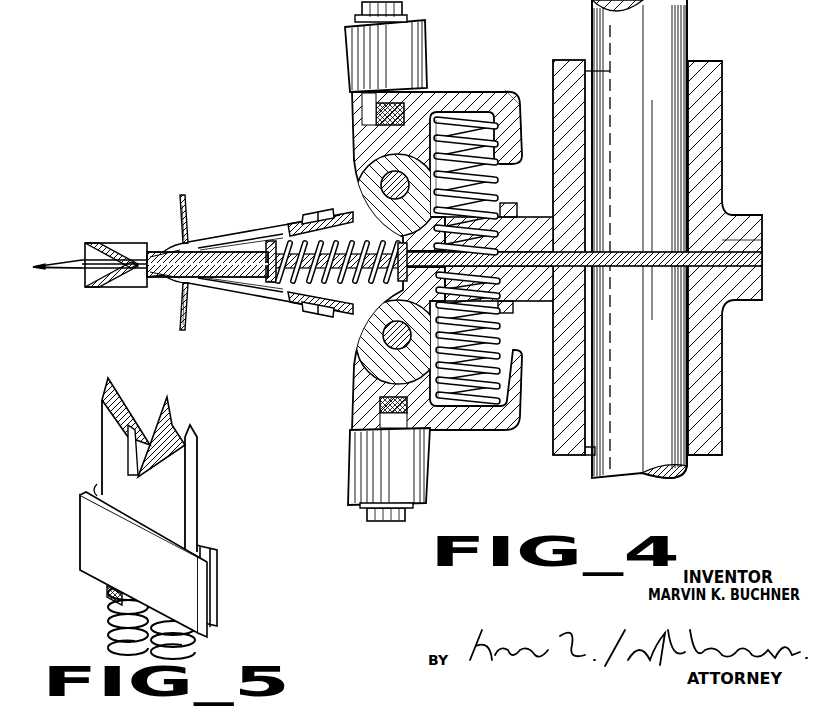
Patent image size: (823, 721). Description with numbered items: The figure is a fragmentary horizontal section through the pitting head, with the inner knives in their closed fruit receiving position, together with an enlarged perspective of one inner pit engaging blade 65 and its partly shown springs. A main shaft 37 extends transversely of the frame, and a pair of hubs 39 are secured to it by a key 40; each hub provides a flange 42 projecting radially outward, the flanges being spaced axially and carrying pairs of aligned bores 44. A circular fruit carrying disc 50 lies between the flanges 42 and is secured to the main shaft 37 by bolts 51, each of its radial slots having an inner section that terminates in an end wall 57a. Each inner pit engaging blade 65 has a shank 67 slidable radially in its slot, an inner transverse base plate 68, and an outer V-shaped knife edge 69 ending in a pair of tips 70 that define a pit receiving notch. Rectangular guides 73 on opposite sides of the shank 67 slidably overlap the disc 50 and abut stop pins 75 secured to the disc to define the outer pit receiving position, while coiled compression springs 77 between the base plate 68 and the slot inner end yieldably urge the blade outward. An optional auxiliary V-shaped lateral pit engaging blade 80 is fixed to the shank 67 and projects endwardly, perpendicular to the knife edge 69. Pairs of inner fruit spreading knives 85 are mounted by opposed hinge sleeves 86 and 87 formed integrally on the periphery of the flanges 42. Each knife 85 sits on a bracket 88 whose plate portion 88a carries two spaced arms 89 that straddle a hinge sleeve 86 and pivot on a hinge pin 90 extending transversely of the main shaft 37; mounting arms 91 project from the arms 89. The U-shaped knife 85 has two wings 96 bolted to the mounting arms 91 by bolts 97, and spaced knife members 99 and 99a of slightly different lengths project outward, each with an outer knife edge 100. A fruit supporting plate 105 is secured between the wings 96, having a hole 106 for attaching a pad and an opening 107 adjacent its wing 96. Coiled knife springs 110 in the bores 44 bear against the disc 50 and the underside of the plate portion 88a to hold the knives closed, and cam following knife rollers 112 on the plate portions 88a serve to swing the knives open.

In FIG. 4, the main shaft 37 is at (660, 32).
In FIG. 4, the hub 39 is at (708, 103).
In FIG. 4, the key 40 is at (585, 178).
In FIG. 4, the flange 42 is at (560, 247).
In FIG. 4, the bore 44 is at (515, 215).
In FIG. 4, the fruit carrying disc 50 is at (721, 250).
In FIG. 4, the bolt 51 is at (500, 205).
In FIG. 4, the end wall 57a is at (400, 237).
In FIG. 4, the inner pit engaging blade 65 is at (154, 247).
In FIG. 5, the inner pit engaging blade 65 is at (197, 487).
In FIG. 4, the shank 67 is at (205, 260).
In FIG. 5, the shank 67 is at (125, 506).
In FIG. 4, the base plate 68 is at (274, 285).
In FIG. 5, the base plate 68 is at (118, 610).
In FIG. 4, the V-shaped knife edge 69 is at (92, 257).
In FIG. 5, the V-shaped knife edge 69 is at (125, 415).
In FIG. 5, the tip 70 is at (108, 380).
In FIG. 4, the rectangular guide 73 is at (237, 252).
In FIG. 5, the rectangular guide 73 is at (147, 545).
In FIG. 4, the stop pin 75 is at (192, 250).
In FIG. 4, the coiled compression spring 77 is at (380, 285).
In FIG. 5, the coiled compression spring 77 is at (113, 633).
In FIG. 4, the auxiliary V-shaped lateral pit engaging blade 80 is at (110, 278).
In FIG. 5, the auxiliary V-shaped lateral pit engaging blade 80 is at (128, 450).
In FIG. 4, the inner fruit spreading knife 85 is at (263, 226).
In FIG. 4, the hinge sleeve 86 is at (385, 360).
In FIG. 4, the hinge sleeve 87 is at (392, 162).
In FIG. 4, the bracket 88 is at (352, 100).
In FIG. 4, the plate portion 88a is at (472, 100).
In FIG. 4, the arm 89 is at (388, 143).
In FIG. 4, the hinge pin 90 is at (393, 185).
In FIG. 4, the mounting arm 91 is at (302, 226).
In FIG. 4, the wing 96 is at (220, 236).
In FIG. 4, the bolt 97 is at (312, 212).
In FIG. 4, the knife member 99 is at (82, 260).
In FIG. 4, the knife member 99a is at (87, 270).
In FIG. 4, the outer knife edge 100 is at (33, 268).
In FIG. 4, the fruit supporting plate 105 is at (185, 195).
In FIG. 4, the hole 106 is at (188, 205).
In FIG. 4, the opening 107 is at (160, 278).
In FIG. 4, the coiled knife spring 110 is at (458, 118).
In FIG. 4, the cam following knife roller 112 is at (400, 34).